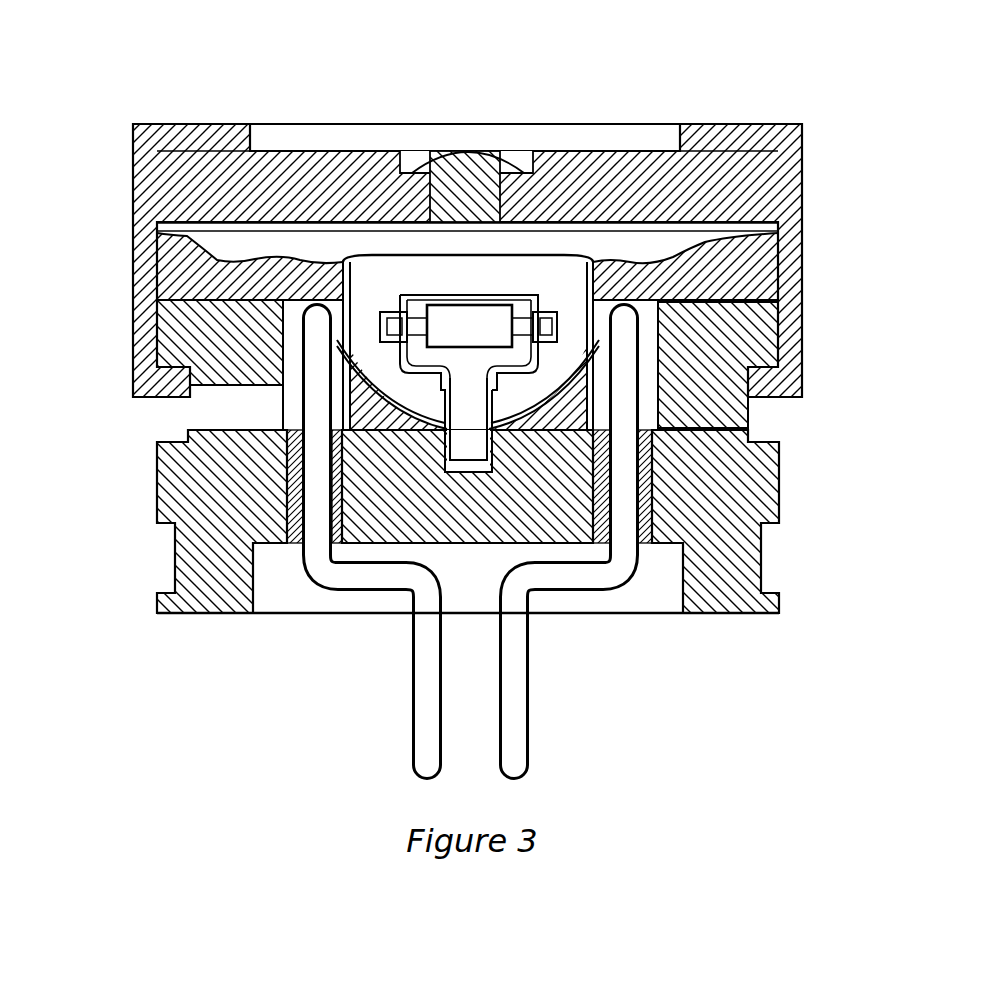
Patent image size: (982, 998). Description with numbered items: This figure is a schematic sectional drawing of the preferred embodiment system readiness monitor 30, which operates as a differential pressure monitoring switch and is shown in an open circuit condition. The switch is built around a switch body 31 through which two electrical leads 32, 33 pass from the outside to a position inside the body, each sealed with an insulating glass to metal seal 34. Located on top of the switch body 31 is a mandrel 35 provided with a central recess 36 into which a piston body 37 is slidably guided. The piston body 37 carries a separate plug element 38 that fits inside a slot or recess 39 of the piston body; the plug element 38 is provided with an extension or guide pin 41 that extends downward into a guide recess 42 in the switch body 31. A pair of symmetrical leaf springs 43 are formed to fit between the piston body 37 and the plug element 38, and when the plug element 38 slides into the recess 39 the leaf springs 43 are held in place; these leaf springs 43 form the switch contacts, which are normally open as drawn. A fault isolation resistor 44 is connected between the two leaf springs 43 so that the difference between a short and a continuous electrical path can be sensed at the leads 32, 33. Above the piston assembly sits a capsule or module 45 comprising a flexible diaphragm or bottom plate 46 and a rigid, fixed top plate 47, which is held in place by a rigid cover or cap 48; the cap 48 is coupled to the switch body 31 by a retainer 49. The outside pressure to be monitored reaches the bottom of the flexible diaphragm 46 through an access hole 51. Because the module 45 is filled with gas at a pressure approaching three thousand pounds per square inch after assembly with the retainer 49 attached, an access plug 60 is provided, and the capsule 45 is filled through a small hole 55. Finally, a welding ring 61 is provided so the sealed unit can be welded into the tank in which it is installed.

The sensor assembly 30 is at (250, 74).
The switch body 31 is at (765, 493).
The electrical lead 32 is at (412, 730).
The electrical lead 33 is at (518, 730).
The insulating glass to metal seal 34 is at (293, 546).
The mandrel 35 is at (762, 270).
The central recess 36 is at (570, 258).
The piston body 37 is at (370, 265).
The plug element 38 is at (505, 352).
The slot or recess 39 is at (429, 298).
The guide pin 41 is at (470, 443).
The guide recess 42 is at (445, 462).
The leaf springs 43 is at (590, 347).
The fault isolation resistor 44 is at (456, 337).
The capsule or module 45 is at (244, 256).
The flexible diaphragm 46 is at (760, 228).
The rigid top plate 47 is at (703, 223).
The cap 48 is at (648, 150).
The retainer 49 is at (134, 147).
The access hole 51 is at (215, 393).
The small hole 55 is at (470, 231).
The access plug 60 is at (445, 205).
The welding ring 61 is at (779, 598).